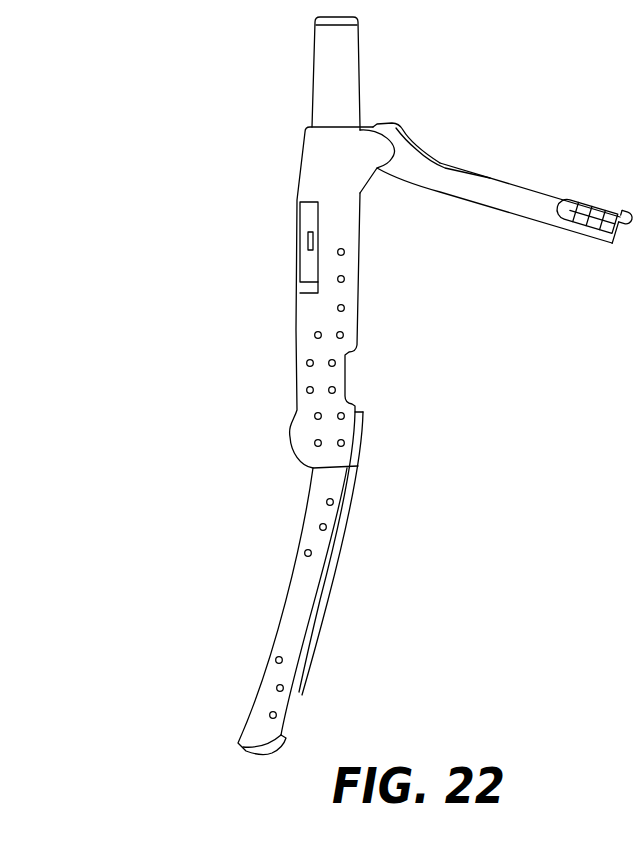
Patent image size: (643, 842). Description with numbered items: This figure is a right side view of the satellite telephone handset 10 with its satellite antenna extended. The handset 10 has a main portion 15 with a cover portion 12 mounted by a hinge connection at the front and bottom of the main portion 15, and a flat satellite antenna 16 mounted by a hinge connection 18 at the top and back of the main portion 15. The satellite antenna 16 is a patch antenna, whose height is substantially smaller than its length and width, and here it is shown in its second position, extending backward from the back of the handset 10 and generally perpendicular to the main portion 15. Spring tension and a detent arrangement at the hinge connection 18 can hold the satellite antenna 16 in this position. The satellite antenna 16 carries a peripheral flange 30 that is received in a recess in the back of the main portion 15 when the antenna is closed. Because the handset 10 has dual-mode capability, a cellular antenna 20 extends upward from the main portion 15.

The satellite telephone handset 10 is at (256, 137).
The cover portion 12 is at (335, 588).
The main portion 15 is at (313, 346).
The flat satellite antenna 16 is at (562, 234).
The hinge connection 18 is at (386, 126).
The cellular antenna 20 is at (322, 52).
The peripheral flange 30 is at (508, 204).